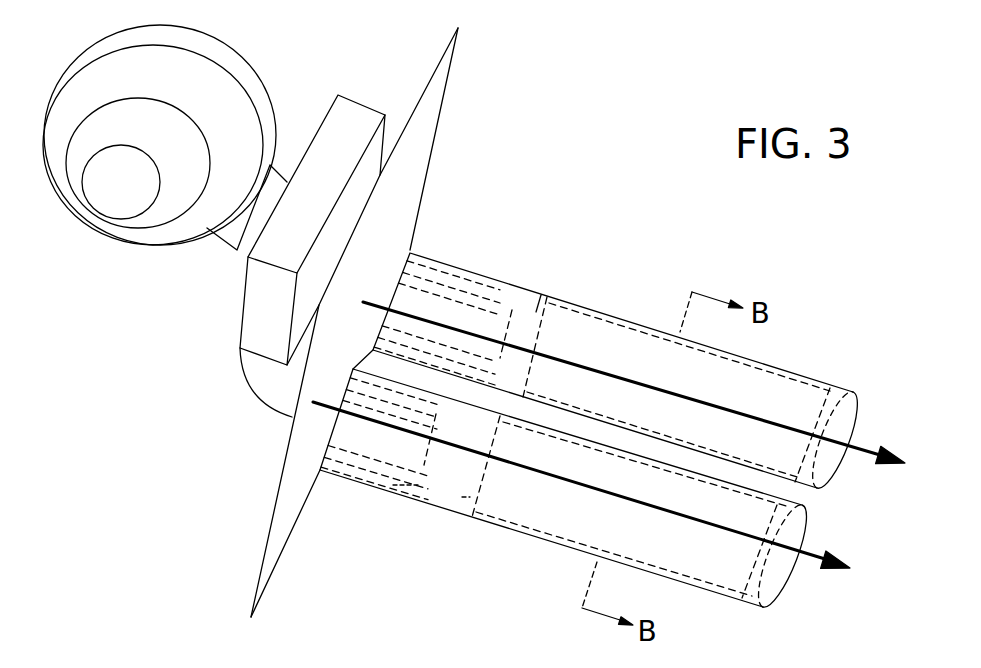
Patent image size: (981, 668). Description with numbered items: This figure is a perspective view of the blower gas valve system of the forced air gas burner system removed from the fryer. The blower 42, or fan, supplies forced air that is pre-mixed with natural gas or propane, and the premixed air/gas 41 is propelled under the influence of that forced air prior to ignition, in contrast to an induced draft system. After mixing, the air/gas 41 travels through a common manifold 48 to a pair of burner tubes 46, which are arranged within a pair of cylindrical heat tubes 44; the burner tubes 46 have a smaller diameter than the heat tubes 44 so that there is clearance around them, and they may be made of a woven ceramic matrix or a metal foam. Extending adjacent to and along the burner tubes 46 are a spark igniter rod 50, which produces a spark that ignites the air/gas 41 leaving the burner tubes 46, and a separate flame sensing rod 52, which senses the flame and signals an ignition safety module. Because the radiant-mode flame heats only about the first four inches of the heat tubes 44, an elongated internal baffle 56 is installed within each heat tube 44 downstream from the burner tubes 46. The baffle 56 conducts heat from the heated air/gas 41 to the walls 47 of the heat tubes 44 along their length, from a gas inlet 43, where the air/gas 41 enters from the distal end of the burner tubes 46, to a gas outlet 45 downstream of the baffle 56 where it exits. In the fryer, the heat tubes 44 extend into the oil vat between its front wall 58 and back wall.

The air/gas 41 is at (767, 418).
The blower 42 is at (243, 72).
The gas inlet 43 is at (520, 323).
The heat tubes 44 is at (510, 293).
The gas outlet 45 is at (848, 410).
The burner tubes 46 is at (446, 302).
The walls 47 is at (620, 320).
The common manifold 48 is at (263, 312).
The spark igniter rod 50 is at (393, 485).
The flame sensing rod 52 is at (462, 497).
The baffle 56 is at (795, 407).
The front wall 58 is at (313, 405).